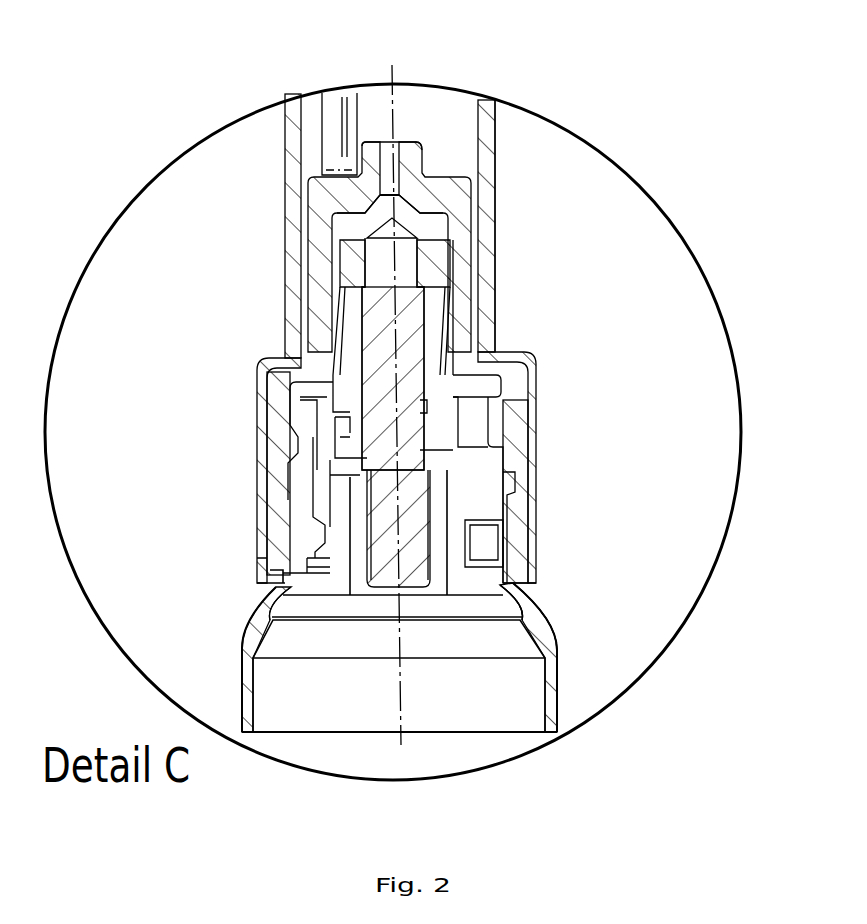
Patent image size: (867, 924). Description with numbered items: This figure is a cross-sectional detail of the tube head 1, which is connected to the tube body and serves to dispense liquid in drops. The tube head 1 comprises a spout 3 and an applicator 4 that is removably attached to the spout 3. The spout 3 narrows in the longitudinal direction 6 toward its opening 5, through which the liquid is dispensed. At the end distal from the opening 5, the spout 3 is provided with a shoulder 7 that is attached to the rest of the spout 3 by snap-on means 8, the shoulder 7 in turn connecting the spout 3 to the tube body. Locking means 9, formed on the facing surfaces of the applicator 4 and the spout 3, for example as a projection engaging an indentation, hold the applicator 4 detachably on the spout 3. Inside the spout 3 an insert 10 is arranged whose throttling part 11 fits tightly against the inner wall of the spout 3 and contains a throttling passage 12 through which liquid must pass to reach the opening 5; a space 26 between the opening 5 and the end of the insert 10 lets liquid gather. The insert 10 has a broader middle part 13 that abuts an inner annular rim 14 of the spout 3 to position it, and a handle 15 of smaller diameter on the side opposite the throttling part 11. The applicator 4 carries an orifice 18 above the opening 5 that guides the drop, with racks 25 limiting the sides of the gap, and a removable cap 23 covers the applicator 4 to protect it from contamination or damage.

The tube head 1 is at (163, 56).
The spout 3 is at (433, 318).
The applicator 4 is at (467, 280).
The opening 5 is at (403, 196).
The longitudinal direction 6 is at (402, 677).
The shoulder 7 is at (547, 603).
The snap-on means 8 is at (490, 523).
The locking means 9 is at (525, 482).
The insert 10 is at (308, 416).
The throttling part 11 is at (378, 370).
The throttling passage 12 is at (368, 318).
The middle part 13 is at (377, 437).
The inner annular rim 14 is at (430, 425).
The handle 15 is at (385, 512).
The orifice 18 is at (418, 138).
The cap 23 is at (498, 140).
The racks 25 is at (333, 95).
The space 26 is at (402, 262).